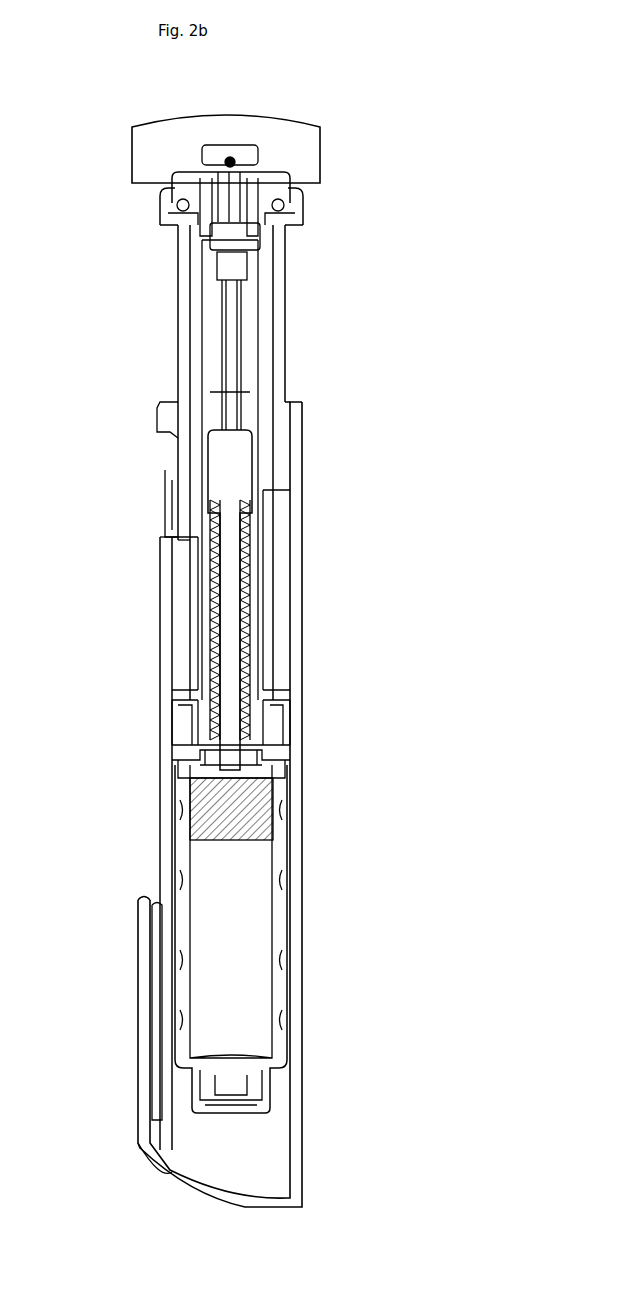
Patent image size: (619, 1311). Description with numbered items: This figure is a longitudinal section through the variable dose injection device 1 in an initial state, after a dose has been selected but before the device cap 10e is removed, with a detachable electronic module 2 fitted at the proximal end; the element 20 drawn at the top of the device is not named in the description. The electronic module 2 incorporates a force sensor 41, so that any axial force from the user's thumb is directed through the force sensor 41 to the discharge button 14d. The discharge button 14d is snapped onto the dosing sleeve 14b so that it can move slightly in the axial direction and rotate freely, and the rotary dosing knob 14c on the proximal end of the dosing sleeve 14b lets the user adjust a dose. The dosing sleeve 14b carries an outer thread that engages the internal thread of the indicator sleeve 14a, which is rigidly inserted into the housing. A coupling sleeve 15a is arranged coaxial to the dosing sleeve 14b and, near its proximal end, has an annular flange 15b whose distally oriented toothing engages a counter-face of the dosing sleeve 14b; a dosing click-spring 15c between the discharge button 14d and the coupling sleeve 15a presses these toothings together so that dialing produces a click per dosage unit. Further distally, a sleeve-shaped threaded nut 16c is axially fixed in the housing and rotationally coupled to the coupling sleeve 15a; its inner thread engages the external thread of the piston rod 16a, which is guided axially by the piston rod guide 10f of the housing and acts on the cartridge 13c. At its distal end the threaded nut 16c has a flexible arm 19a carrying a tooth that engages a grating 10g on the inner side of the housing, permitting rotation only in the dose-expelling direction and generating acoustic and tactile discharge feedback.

The electronic module 2 is at (267, 73).
The variable dose injection device 1 is at (333, 745).
The cap 20 is at (180, 118).
The force sensor 41 is at (257, 153).
The discharge button 14d is at (180, 183).
The rotary dosing knob 14c is at (160, 203).
The dosing sleeve 14b is at (177, 350).
The indicator sleeve 14a is at (182, 433).
The dosing click-spring 15c is at (260, 185).
The annular flange 15b is at (302, 212).
The coupling sleeve 15a is at (272, 317).
The threaded nut 16c is at (200, 598).
The piston rod 16a is at (227, 647).
The flexible arm 19a is at (300, 708).
The grating 10g is at (213, 742).
The piston rod guide 10f is at (183, 775).
The cartridge 13c is at (263, 958).
The device cap 10e is at (302, 1080).